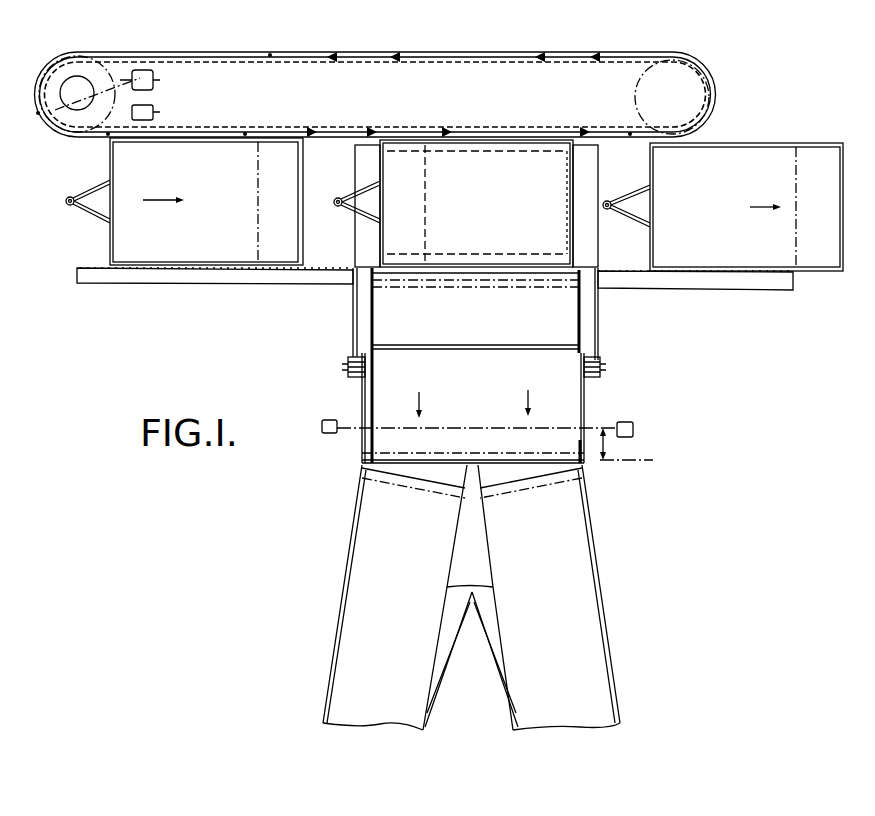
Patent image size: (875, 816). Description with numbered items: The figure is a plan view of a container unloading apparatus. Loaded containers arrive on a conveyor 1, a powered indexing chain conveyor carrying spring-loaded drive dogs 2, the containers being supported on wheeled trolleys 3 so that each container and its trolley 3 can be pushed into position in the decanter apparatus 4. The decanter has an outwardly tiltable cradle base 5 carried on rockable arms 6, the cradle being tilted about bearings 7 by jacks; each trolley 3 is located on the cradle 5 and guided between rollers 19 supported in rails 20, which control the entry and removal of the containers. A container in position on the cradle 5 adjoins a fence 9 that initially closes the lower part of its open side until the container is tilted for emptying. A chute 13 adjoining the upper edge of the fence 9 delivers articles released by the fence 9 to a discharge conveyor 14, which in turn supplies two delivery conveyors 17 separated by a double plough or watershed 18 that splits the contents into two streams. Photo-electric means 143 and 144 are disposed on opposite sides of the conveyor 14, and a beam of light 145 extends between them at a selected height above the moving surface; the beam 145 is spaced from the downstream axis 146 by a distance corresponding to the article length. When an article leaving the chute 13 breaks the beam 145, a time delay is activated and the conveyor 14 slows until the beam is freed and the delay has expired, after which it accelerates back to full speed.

The conveyor 1 is at (375, 102).
The drive dogs 2 is at (266, 53).
The wheeled trolleys 3 is at (304, 232).
The decanter apparatus 4 is at (488, 387).
The cradle base 5 is at (592, 173).
The rockable arms 6 is at (353, 330).
The bearings 7 is at (348, 372).
The fence 9 is at (582, 278).
The chute 13 is at (547, 329).
The discharge conveyor 14 is at (559, 407).
The delivery conveyors 17 is at (471, 597).
The double plough 18 is at (485, 519).
The rollers 19 is at (90, 266).
The rails 20 is at (73, 283).
The photo-electric means 143 is at (322, 432).
The photo-electric means 144 is at (635, 428).
The beam of light 145 is at (350, 429).
The downstream axis 146 is at (613, 462).